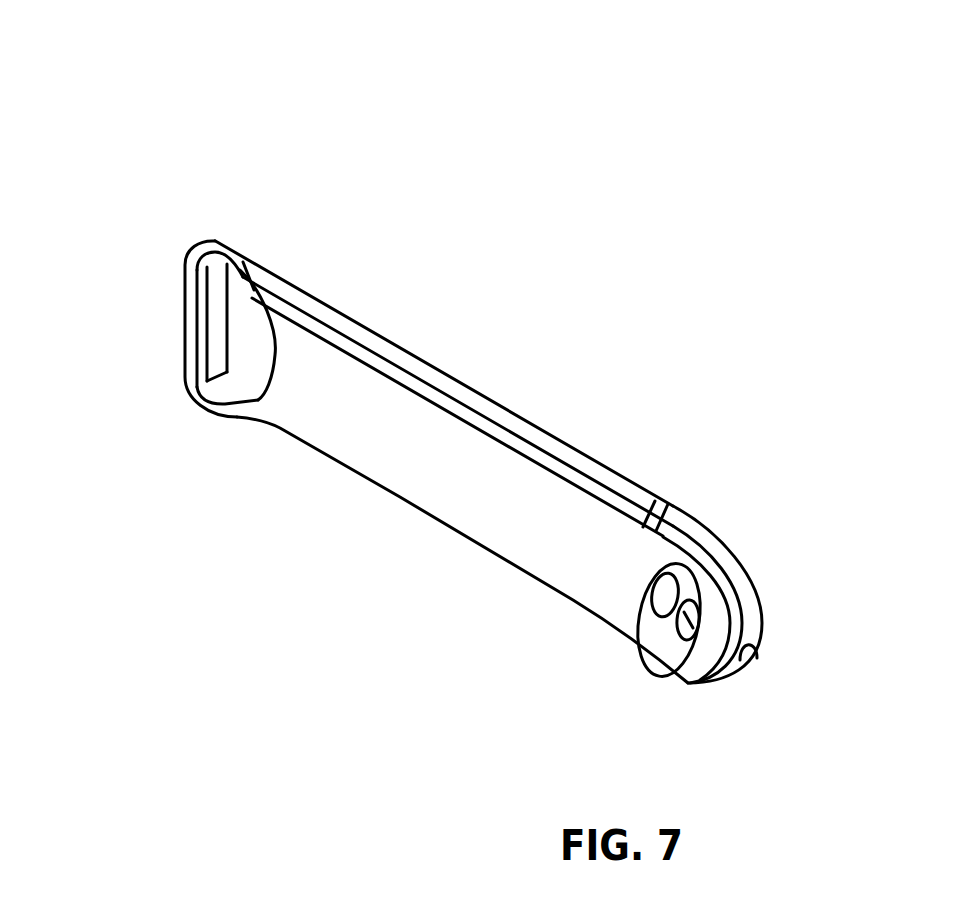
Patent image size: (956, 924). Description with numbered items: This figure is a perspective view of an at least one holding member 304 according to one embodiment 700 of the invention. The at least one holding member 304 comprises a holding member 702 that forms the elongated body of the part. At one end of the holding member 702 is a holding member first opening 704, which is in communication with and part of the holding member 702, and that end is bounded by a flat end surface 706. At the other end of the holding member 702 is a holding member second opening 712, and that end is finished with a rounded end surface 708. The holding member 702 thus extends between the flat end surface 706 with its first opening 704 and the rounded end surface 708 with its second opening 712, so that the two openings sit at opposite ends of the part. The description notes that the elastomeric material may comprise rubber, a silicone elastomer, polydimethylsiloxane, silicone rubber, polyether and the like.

The embodiment 700 is at (690, 66).
The at least one holding member 304 is at (460, 305).
The holding member 702 is at (487, 478).
The holding member first opening 704 is at (243, 333).
The flat end surface 706 is at (185, 282).
The rounded end surface 708 is at (752, 658).
The holding member second opening 712 is at (673, 600).